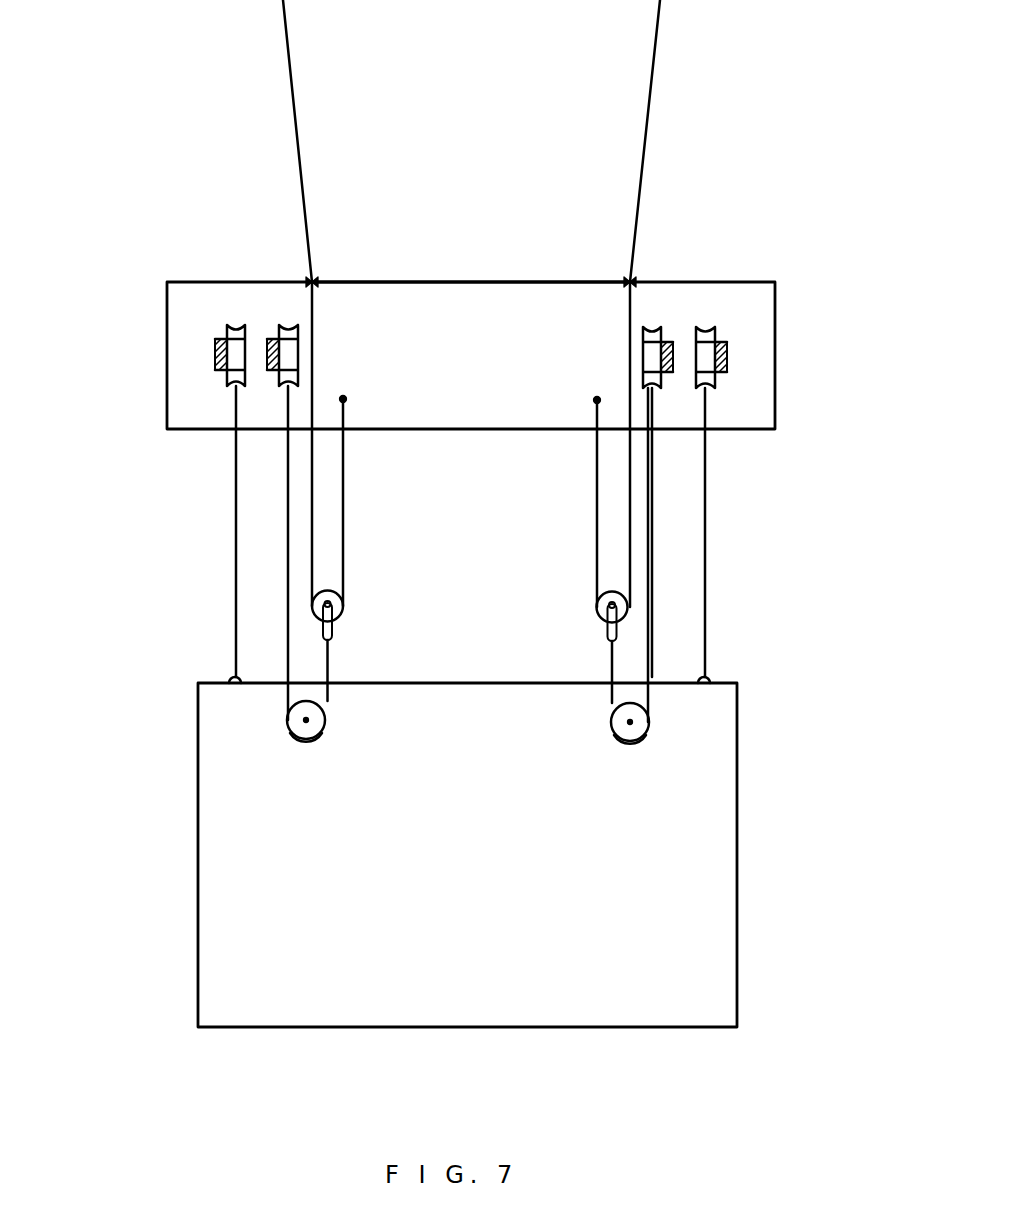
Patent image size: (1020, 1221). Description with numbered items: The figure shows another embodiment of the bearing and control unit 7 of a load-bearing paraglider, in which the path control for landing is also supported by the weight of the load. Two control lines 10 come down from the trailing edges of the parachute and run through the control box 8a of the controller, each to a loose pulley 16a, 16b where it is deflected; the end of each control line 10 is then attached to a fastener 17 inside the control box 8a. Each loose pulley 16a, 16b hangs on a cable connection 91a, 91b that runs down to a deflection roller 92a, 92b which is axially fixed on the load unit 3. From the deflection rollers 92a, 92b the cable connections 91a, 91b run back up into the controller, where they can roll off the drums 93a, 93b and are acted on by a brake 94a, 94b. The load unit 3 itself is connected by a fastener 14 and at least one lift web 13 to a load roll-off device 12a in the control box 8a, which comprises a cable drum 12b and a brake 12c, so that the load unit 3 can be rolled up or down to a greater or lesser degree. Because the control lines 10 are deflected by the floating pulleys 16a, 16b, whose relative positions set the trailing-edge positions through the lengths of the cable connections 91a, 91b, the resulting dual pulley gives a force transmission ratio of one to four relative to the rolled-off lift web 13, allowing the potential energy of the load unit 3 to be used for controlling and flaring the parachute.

The load unit 3 is at (723, 830).
The bearing and control unit 7 is at (773, 446).
The control box 8a is at (527, 281).
The control line 10 is at (290, 60).
The load roll-off device 12a is at (192, 372).
The cable drum 12b is at (230, 368).
The brake 12c is at (227, 342).
The lift web 13 is at (235, 570).
The fastener 14 is at (230, 667).
The loose pulley 16a is at (343, 608).
The loose pulley 16b is at (603, 605).
The fastener 17 is at (348, 399).
The cable connection 91a is at (328, 697).
The cable connection 91b is at (610, 698).
The deflection roller 92a is at (315, 733).
The deflection roller 92b is at (620, 733).
The drum 93a is at (295, 325).
The drum 93b is at (657, 330).
The brake 94a is at (268, 337).
The brake 94b is at (672, 340).